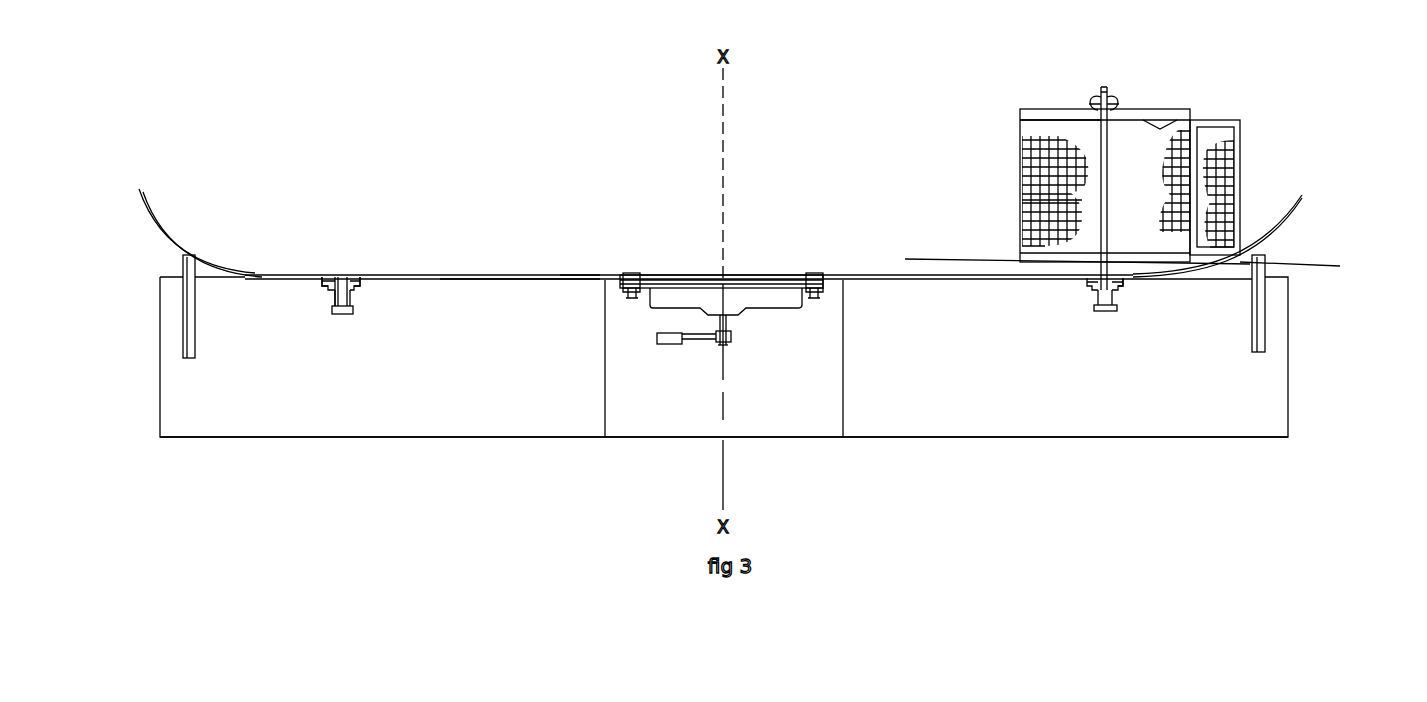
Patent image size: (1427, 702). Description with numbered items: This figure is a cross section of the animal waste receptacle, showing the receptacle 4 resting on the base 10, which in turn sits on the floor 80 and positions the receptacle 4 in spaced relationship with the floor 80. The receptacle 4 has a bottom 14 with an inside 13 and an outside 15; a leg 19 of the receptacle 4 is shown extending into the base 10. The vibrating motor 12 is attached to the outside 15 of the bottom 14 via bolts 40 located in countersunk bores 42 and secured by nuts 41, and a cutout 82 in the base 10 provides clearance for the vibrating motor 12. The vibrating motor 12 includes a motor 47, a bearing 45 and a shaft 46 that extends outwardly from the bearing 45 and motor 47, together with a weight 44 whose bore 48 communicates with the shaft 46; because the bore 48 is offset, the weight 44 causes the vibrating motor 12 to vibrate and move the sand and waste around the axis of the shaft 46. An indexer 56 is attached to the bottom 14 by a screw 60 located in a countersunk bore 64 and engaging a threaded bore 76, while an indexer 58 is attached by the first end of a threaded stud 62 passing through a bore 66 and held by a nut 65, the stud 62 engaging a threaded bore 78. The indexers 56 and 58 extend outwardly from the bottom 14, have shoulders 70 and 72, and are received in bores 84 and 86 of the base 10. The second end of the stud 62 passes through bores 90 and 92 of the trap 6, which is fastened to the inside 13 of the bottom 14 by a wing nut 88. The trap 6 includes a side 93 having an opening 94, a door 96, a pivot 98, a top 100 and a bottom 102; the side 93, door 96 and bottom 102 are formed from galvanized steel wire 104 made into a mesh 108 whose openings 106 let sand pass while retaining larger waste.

The receptacle 4 is at (195, 226).
The trap 6 is at (1113, 162).
The base 10 is at (1046, 444).
The vibrating motor 12 is at (721, 342).
The inside 13 is at (460, 275).
The bottom 14 is at (572, 290).
The outside 15 is at (540, 282).
The leg 19 is at (1258, 305).
The bolts 40 is at (636, 300).
The nuts 41 is at (630, 292).
The countersunk bores 42 is at (617, 275).
The weight 44 is at (675, 345).
The bearing 45 is at (735, 320).
The shaft 46 is at (728, 345).
The motor 47 is at (785, 315).
The bore 48 is at (730, 348).
The indexer 56 is at (335, 298).
The indexer 58 is at (1105, 344).
The screw 60 is at (345, 306).
The threaded stud 62 is at (1100, 129).
The countersunk bore 64 is at (325, 278).
The nut 65 is at (1066, 260).
The bore 66 is at (1304, 265).
The shoulder 70 is at (360, 288).
The shoulder 72 is at (1122, 288).
The threaded bore 76 is at (355, 308).
The threaded bore 78 is at (1113, 312).
The floor 80 is at (567, 458).
The cutout 82 is at (608, 415).
The bore 84 is at (338, 315).
The bore 86 is at (1097, 310).
The wing nut 88 is at (1115, 102).
The bore 90 is at (1108, 118).
The bore 92 is at (1280, 255).
The side 93 is at (1025, 118).
The opening 94 is at (1190, 122).
The door 96 is at (1222, 178).
The pivot 98 is at (1195, 148).
The top 100 is at (1090, 128).
The bottom 102 is at (1045, 262).
The wire 104 is at (1028, 150).
The openings 106 is at (1200, 238).
The mesh 108 is at (1035, 190).